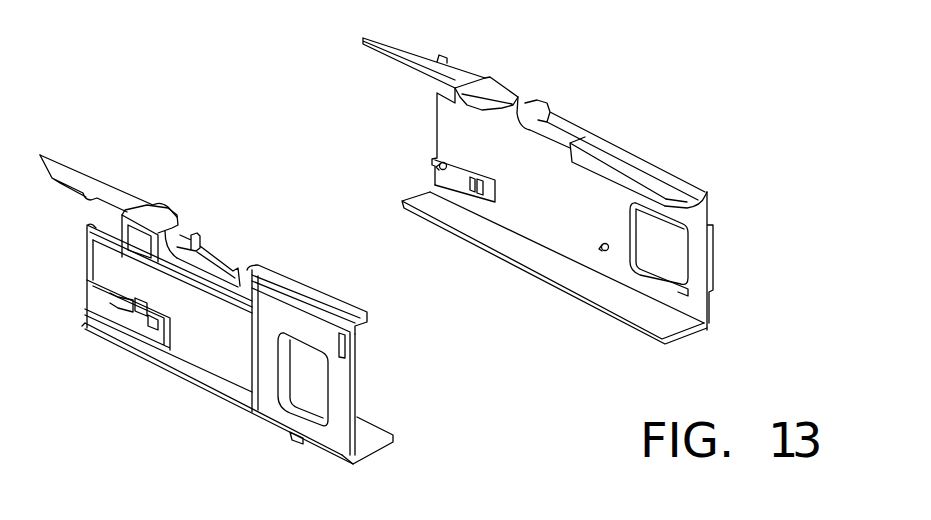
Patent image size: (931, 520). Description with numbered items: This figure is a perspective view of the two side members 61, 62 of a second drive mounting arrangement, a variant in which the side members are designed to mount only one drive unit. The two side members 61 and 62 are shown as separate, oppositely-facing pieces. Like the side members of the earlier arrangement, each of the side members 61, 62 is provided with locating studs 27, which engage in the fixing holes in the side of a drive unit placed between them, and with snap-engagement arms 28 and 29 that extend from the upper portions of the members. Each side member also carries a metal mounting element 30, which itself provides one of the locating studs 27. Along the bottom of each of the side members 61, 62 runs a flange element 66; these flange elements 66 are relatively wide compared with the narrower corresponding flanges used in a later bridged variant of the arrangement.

The locating stud 27 is at (449, 172).
The snap-engagement arm 28 is at (200, 237).
The snap-engagement arm 29 is at (75, 180).
The metal mounting element 30 is at (88, 294).
The side member 61 is at (242, 378).
The side member 62 is at (714, 267).
The flange element 66 is at (373, 427).